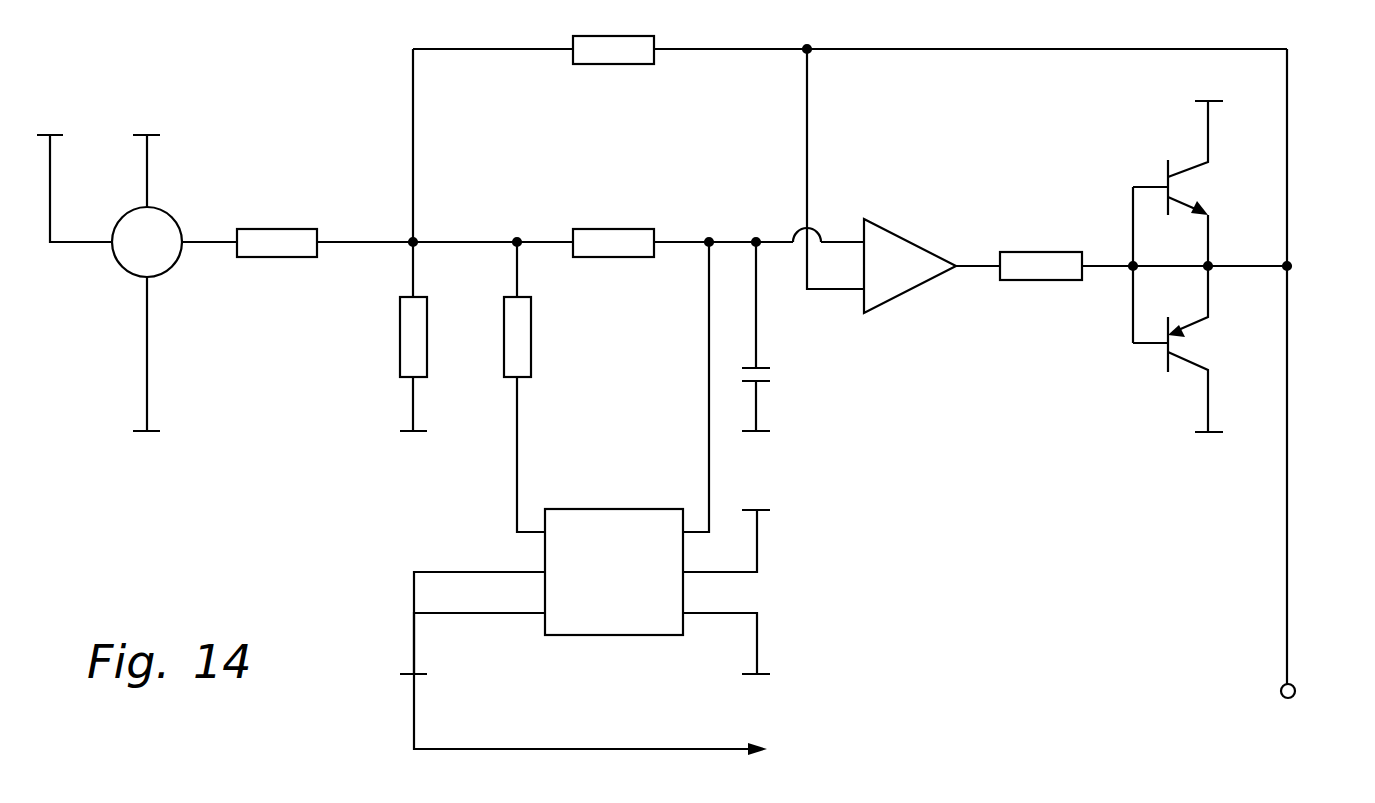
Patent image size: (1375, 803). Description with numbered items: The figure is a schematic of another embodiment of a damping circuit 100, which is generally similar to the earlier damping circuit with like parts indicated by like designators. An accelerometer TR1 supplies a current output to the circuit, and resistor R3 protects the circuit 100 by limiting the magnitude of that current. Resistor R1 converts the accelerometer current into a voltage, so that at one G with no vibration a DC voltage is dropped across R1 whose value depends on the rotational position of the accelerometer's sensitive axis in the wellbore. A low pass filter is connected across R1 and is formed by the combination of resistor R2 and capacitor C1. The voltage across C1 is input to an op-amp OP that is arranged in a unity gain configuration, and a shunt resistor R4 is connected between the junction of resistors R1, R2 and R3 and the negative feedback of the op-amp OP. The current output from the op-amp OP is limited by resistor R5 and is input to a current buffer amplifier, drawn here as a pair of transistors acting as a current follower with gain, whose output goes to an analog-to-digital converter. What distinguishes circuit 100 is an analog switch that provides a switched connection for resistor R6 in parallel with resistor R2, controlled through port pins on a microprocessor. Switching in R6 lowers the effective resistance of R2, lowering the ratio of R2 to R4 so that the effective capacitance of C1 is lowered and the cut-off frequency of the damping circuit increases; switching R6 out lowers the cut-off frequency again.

The damping circuit 100 is at (240, 56).
The accelerometer transducer TR1 is at (203, 284).
The resistor R1 is at (444, 341).
The resistor R2 is at (683, 226).
The resistor R3 is at (377, 226).
The shunt resistor R4 is at (850, 123).
The resistor R5 is at (1143, 250).
The resistor R6 is at (539, 385).
The capacitor C1 is at (786, 343).
The op-amp OP is at (932, 266).